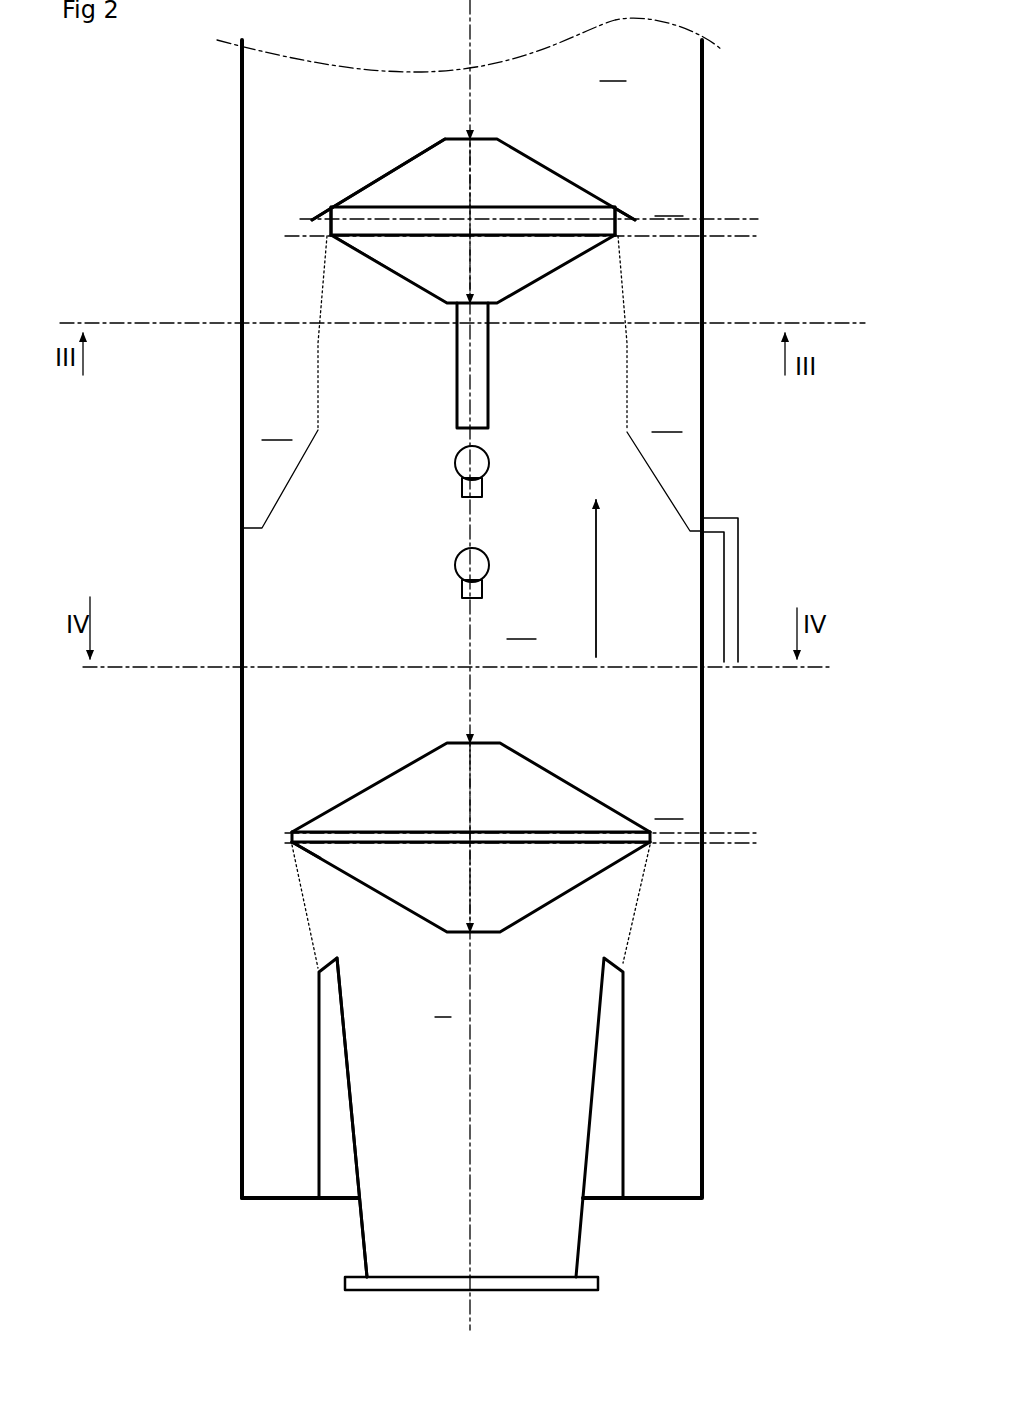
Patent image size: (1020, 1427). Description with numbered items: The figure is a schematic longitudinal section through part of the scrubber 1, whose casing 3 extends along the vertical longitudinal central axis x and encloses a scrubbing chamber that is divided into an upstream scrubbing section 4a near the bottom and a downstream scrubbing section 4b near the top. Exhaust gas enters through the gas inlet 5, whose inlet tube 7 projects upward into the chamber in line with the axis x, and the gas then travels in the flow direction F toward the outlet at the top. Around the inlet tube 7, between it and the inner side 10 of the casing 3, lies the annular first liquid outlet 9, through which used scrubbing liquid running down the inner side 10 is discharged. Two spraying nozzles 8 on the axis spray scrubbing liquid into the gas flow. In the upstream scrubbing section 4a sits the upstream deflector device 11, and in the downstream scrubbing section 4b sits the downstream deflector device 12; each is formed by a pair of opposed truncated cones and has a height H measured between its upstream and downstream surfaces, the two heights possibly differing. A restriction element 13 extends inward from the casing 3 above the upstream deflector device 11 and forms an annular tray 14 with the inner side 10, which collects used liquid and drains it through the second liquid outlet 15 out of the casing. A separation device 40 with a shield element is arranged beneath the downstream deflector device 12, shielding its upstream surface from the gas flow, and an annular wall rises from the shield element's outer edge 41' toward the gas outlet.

The scrubber 1 is at (712, 131).
The casing 3 is at (242, 95).
The upstream scrubbing section 4a is at (522, 627).
The downstream scrubbing section 4b is at (615, 69).
The gas inlet 5 is at (471, 1067).
The inlet tube 7 is at (337, 1033).
The spraying nozzle 8 is at (455, 563).
The first liquid outlet 9 is at (282, 1198).
The inner side of the casing 10 is at (242, 612).
The upstream deflector device 11 is at (283, 851).
The downstream deflector device 12 is at (282, 217).
The restriction element 13 is at (318, 357).
The annular tray 14 is at (473, 468).
The second liquid outlet 15 is at (723, 518).
The separation device 40 is at (398, 302).
The outer edge of the shield element 41' is at (712, 255).
The height H is at (473, 177).
The flow direction F is at (596, 630).
The longitudinal central axis x is at (470, 1057).